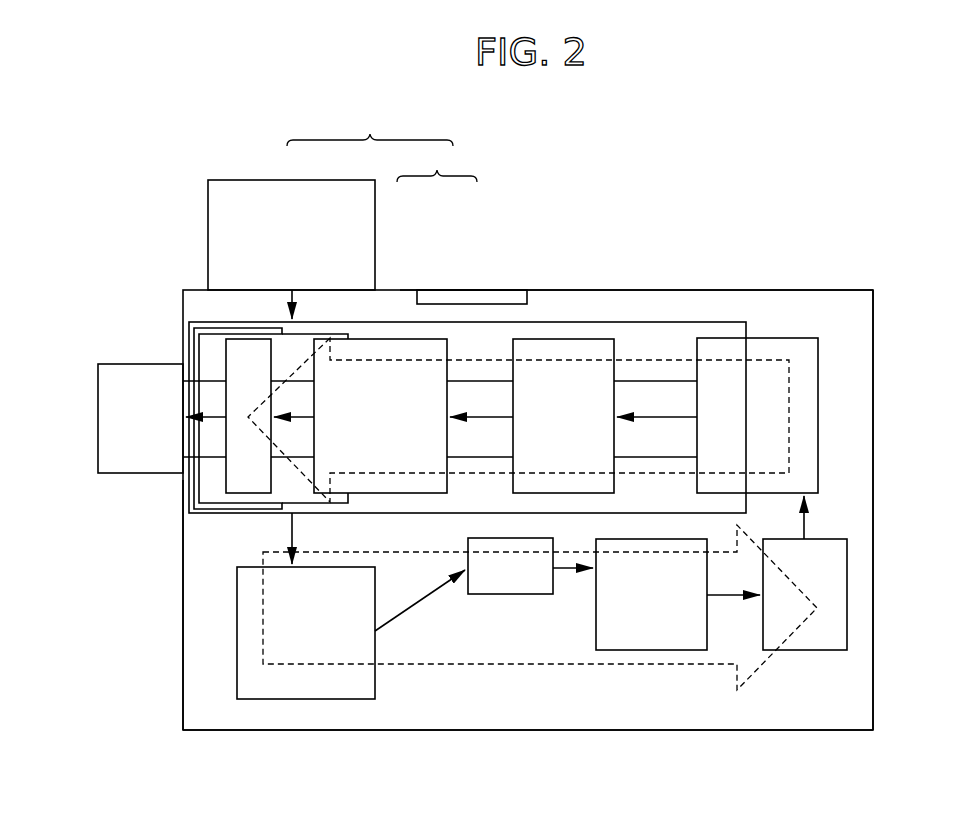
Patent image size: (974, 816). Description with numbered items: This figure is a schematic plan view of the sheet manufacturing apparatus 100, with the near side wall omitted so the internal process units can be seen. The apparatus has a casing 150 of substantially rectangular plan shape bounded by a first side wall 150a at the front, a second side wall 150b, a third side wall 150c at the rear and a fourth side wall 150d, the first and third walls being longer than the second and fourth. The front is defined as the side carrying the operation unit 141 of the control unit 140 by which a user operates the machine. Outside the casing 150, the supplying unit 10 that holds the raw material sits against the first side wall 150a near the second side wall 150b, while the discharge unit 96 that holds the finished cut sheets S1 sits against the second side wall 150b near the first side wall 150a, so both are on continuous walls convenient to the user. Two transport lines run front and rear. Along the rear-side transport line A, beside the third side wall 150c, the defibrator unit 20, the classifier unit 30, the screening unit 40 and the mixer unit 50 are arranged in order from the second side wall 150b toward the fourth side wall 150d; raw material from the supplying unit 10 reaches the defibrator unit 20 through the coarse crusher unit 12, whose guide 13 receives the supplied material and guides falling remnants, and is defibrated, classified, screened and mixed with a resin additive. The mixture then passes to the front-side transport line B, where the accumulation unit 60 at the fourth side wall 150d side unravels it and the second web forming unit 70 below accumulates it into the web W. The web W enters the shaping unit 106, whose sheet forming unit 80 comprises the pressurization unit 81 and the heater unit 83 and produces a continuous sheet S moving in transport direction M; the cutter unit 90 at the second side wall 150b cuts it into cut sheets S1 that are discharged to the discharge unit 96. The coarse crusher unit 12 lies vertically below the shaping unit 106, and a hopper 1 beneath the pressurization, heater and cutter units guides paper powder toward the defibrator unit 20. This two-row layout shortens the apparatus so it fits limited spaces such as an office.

The sheet manufacturing apparatus 100 is at (850, 272).
The casing 150 is at (553, 741).
The first side wall 150a is at (693, 290).
The second side wall 150b is at (183, 600).
The third side wall 150c is at (700, 730).
The fourth side wall 150d is at (873, 355).
The supplying unit 10 is at (222, 228).
The discharge unit 96 is at (135, 373).
The shaping unit 106 is at (435, 300).
The cutter unit 90 is at (257, 350).
The sheet forming unit 80 is at (464, 319).
The heater unit 83 is at (407, 339).
The pressurization unit 81 is at (522, 339).
The operation unit 141 is at (511, 263).
The control unit 140 is at (517, 290).
The second web forming unit 70 is at (775, 330).
The accumulation unit 60 is at (797, 350).
The hopper 1 is at (413, 502).
The coarse crusher unit 12 is at (285, 478).
The guide 13 is at (213, 493).
The defibrator unit 20 is at (333, 693).
The classifier unit 30 is at (513, 594).
The screening unit 40 is at (650, 650).
The mixer unit 50 is at (808, 650).
The web W is at (633, 390).
The transport direction M is at (653, 415).
The continuous sheet S is at (304, 388).
The cut sheets S1 is at (207, 389).
The rear-side transport line A is at (452, 664).
The front-side transport line B is at (368, 360).